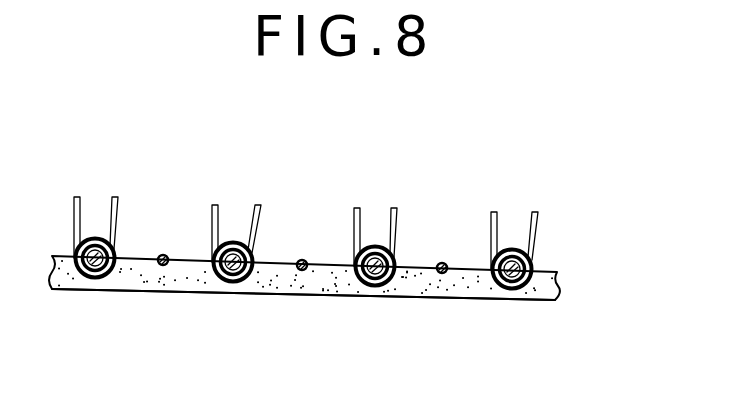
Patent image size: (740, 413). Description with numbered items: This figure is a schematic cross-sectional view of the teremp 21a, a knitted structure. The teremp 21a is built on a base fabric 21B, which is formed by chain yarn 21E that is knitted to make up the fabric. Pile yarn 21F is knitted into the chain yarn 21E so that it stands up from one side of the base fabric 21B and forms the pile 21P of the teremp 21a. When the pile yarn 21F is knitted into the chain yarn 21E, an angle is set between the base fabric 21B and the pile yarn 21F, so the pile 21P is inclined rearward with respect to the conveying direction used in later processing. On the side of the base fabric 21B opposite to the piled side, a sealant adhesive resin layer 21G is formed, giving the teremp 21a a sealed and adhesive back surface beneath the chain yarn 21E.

The teremp 21a is at (358, 104).
The base fabric 21B is at (562, 270).
The chain yarn 21E is at (107, 263).
The pile yarn 21F is at (80, 207).
The sealant adhesive resin layer 21G is at (335, 291).
The pile 21P is at (552, 217).